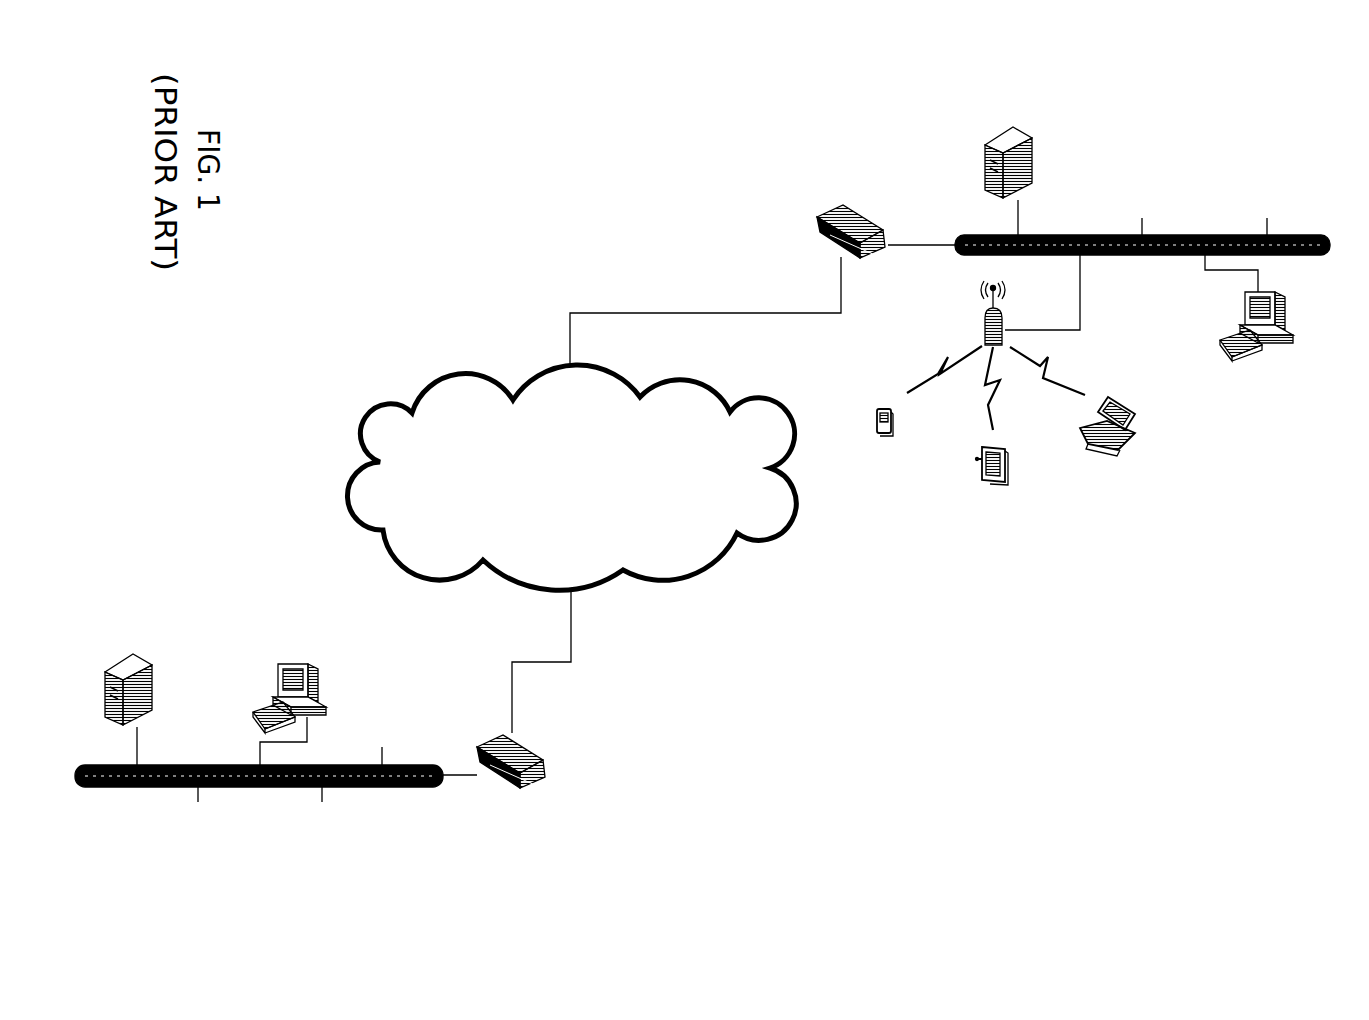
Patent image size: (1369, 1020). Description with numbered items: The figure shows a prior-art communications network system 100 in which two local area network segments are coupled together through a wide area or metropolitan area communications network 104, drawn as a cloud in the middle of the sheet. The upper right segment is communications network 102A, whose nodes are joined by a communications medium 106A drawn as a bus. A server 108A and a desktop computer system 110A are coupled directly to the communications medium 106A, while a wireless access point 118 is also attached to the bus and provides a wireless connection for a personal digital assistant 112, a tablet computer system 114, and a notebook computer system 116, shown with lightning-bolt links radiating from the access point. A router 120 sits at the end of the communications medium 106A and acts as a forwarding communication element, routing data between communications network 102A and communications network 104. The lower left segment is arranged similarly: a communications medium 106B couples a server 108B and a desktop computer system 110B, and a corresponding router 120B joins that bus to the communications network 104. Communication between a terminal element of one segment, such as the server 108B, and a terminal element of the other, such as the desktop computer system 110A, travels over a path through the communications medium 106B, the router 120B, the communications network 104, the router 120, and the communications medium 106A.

The communications network system 100 is at (447, 168).
The communications network 102A is at (950, 140).
The communications network 104 is at (587, 488).
The communications medium 106A is at (1177, 235).
The communications medium 106B is at (348, 785).
The server 108A is at (1033, 137).
The server 108B is at (153, 683).
The desktop computer system 110A is at (1235, 330).
The desktop computer system 110B is at (317, 697).
The personal digital assistant 112 is at (883, 433).
The tablet computer system 114 is at (1005, 482).
The notebook computer system 116 is at (1113, 447).
The wireless access point 118 is at (987, 330).
The router 120 is at (832, 210).
The router 120B is at (533, 777).